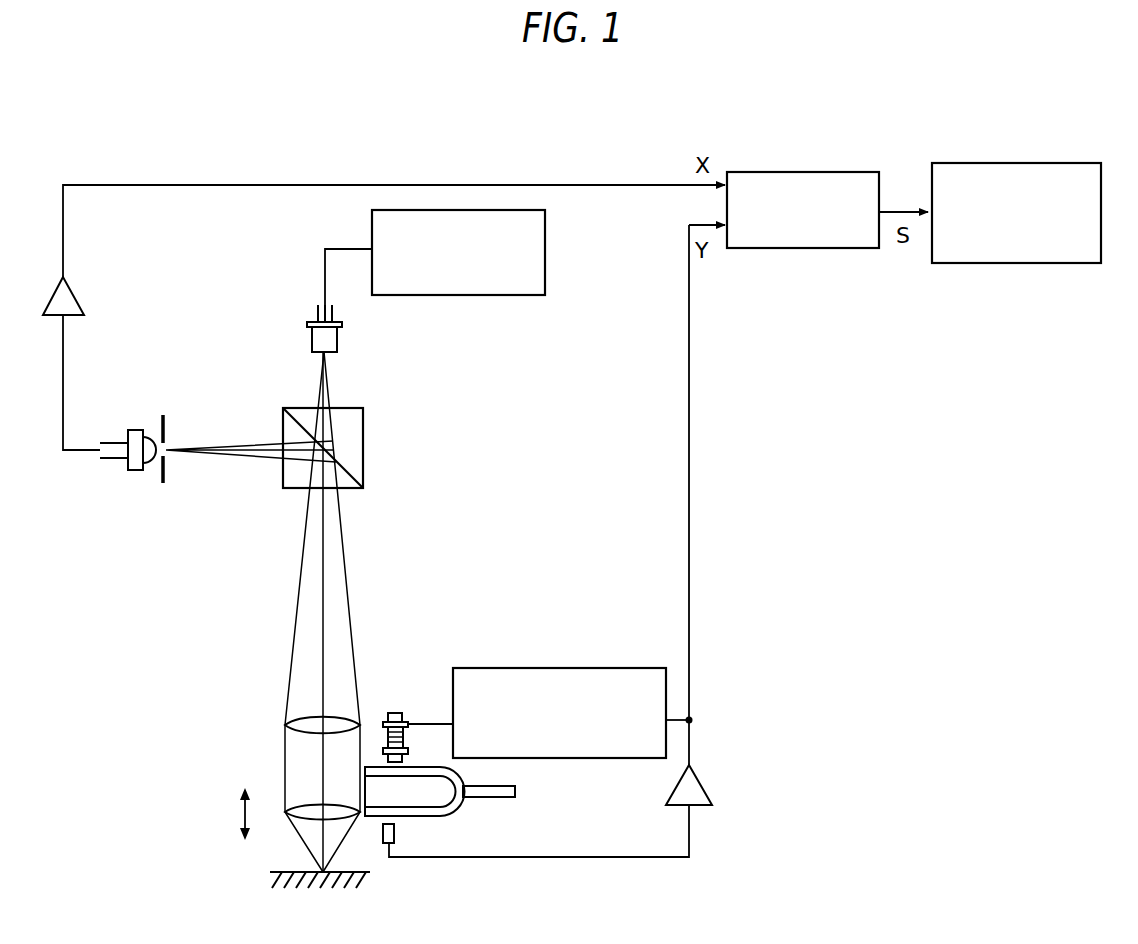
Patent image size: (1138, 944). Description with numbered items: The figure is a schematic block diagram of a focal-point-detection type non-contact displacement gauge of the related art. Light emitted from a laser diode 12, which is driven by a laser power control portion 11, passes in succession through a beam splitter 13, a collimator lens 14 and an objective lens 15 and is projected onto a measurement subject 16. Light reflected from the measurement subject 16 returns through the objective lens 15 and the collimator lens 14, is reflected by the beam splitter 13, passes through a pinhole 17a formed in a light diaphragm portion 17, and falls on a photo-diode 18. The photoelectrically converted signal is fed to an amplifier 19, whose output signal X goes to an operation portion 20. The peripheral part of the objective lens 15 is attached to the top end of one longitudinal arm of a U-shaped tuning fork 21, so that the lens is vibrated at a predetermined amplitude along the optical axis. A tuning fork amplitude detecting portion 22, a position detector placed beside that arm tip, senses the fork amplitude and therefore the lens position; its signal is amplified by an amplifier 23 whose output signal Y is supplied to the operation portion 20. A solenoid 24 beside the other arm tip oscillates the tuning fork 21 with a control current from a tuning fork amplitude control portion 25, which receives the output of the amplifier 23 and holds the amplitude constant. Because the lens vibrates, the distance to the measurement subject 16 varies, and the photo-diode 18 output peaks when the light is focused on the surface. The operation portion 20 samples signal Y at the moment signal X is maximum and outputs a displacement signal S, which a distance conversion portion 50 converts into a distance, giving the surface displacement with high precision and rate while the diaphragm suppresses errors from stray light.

The laser power control portion 11 is at (545, 252).
The laser diode 12 is at (342, 338).
The beam splitter 13 is at (363, 452).
The collimator lens 14 is at (292, 726).
The objective lens 15 is at (285, 815).
The measurement subject 16 is at (370, 872).
The light diaphragm portion 17 is at (165, 470).
The pinhole 17a is at (168, 447).
The photo-diode 18 is at (131, 430).
The amplifier 19 is at (75, 292).
The operation portion 20 is at (802, 172).
The tuning fork 21 is at (462, 806).
The tuning fork amplitude detecting portion 22 is at (394, 832).
The amplifier 23 is at (710, 783).
The solenoid 24 is at (388, 713).
The tuning fork amplitude control portion 25 is at (556, 668).
The distance conversion portion 50 is at (1014, 163).